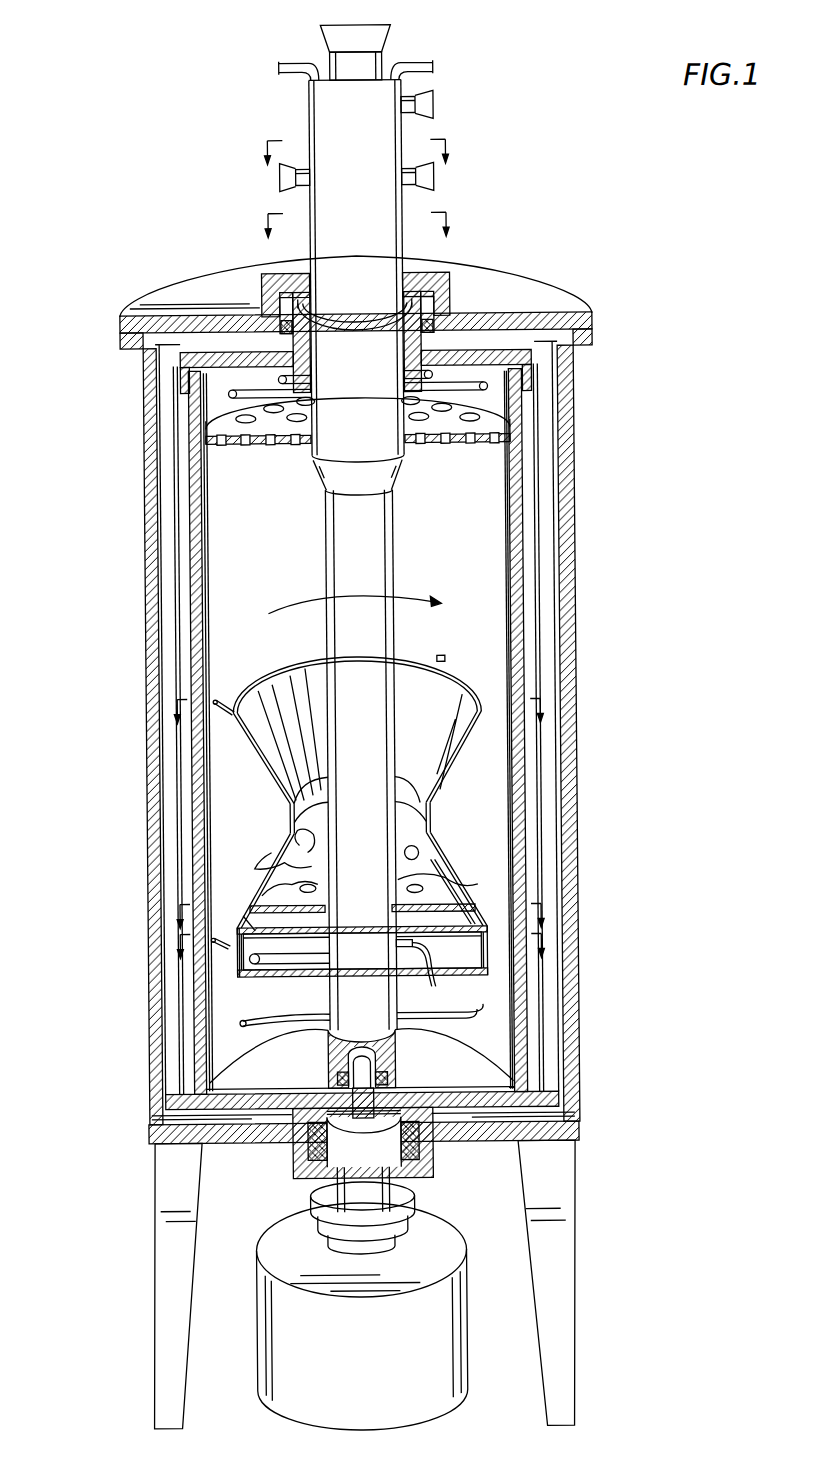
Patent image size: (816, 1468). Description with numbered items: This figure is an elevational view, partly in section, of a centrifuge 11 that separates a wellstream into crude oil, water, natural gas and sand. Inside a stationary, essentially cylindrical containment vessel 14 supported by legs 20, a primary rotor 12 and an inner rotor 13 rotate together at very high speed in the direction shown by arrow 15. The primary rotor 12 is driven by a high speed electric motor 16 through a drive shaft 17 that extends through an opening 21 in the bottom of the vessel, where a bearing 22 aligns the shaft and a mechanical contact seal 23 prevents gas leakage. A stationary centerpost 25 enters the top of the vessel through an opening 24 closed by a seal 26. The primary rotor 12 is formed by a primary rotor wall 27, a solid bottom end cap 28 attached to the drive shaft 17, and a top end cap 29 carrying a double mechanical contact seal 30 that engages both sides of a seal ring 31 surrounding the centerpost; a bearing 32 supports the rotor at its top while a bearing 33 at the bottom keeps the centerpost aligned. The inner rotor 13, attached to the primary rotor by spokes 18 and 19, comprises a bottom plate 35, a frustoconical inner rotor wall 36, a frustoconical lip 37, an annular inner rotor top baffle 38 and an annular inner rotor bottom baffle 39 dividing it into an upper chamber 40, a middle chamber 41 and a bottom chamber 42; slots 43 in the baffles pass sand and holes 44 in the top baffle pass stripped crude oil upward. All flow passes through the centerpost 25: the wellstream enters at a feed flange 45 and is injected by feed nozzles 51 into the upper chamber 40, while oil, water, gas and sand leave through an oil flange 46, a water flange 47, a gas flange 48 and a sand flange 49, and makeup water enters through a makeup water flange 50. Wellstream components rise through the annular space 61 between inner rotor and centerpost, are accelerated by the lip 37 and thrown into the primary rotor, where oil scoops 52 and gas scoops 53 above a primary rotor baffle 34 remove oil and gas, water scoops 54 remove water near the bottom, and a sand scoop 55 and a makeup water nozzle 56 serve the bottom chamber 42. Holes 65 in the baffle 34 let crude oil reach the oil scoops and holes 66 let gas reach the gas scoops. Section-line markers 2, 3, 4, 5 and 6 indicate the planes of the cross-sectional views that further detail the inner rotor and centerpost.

The section line 2- 2 is at (358, 947).
The section line 3- 3 is at (358, 916).
The section line 4- 4 is at (357, 716).
The section line 5- 5 is at (355, 226).
The section line 6- 6 is at (354, 153).
The centrifuge 11 is at (574, 744).
The primary rotor 12 is at (498, 524).
The inner rotor 13 is at (406, 823).
The containment vessel 14 is at (149, 509).
The arrow 15 is at (363, 590).
The electric motor 16 is at (259, 1342).
The drive shaft 17 is at (409, 1201).
The spoke 18 is at (210, 944).
The spoke 19 is at (441, 658).
The legs 20 is at (152, 1250).
The opening 21 is at (395, 1176).
The bearing 22 is at (303, 1132).
The mechanical contact seal 23 is at (304, 1169).
The opening 24 is at (426, 273).
The centerpost 25 is at (391, 536).
The seal 26 is at (471, 279).
The primary rotor wall 27 is at (183, 593).
The bottom end cap 28 is at (472, 1074).
The top end cap 29 is at (490, 353).
The double mechanical contact seal 30 is at (297, 307).
The seal ring 31 is at (350, 318).
The bearing 32 is at (450, 311).
The bearing 33 is at (322, 1077).
The primary rotor baffle 34 is at (421, 462).
The bottom plate 35 is at (477, 971).
The inner rotor wall 36 is at (464, 863).
The lip 37 is at (268, 684).
The inner rotor top baffle 38 is at (295, 882).
The inner rotor bottom baffle 39 is at (482, 958).
The upper chamber 40 is at (285, 842).
The middle chamber 41 is at (253, 929).
The bottom chamber 42 is at (232, 960).
The slots 43 is at (473, 898).
The holes 44 is at (287, 856).
The feed flange 45 is at (375, 21).
The oil flange 46 is at (435, 178).
The water flange 47 is at (281, 178).
The gas flange 48 is at (435, 104).
The sand flange 49 is at (281, 67).
The makeup water flange 50 is at (437, 65).
The feed nozzles 51 is at (293, 822).
The oil scoops 52 is at (229, 394).
The gas scoops 53 is at (279, 378).
The water scoops 54 is at (244, 1018).
The sand scoop 55 is at (291, 964).
The makeup water nozzle 56 is at (432, 974).
The annular space 61 is at (416, 798).
The holes 65 is at (257, 445).
The holes 66 is at (295, 421).